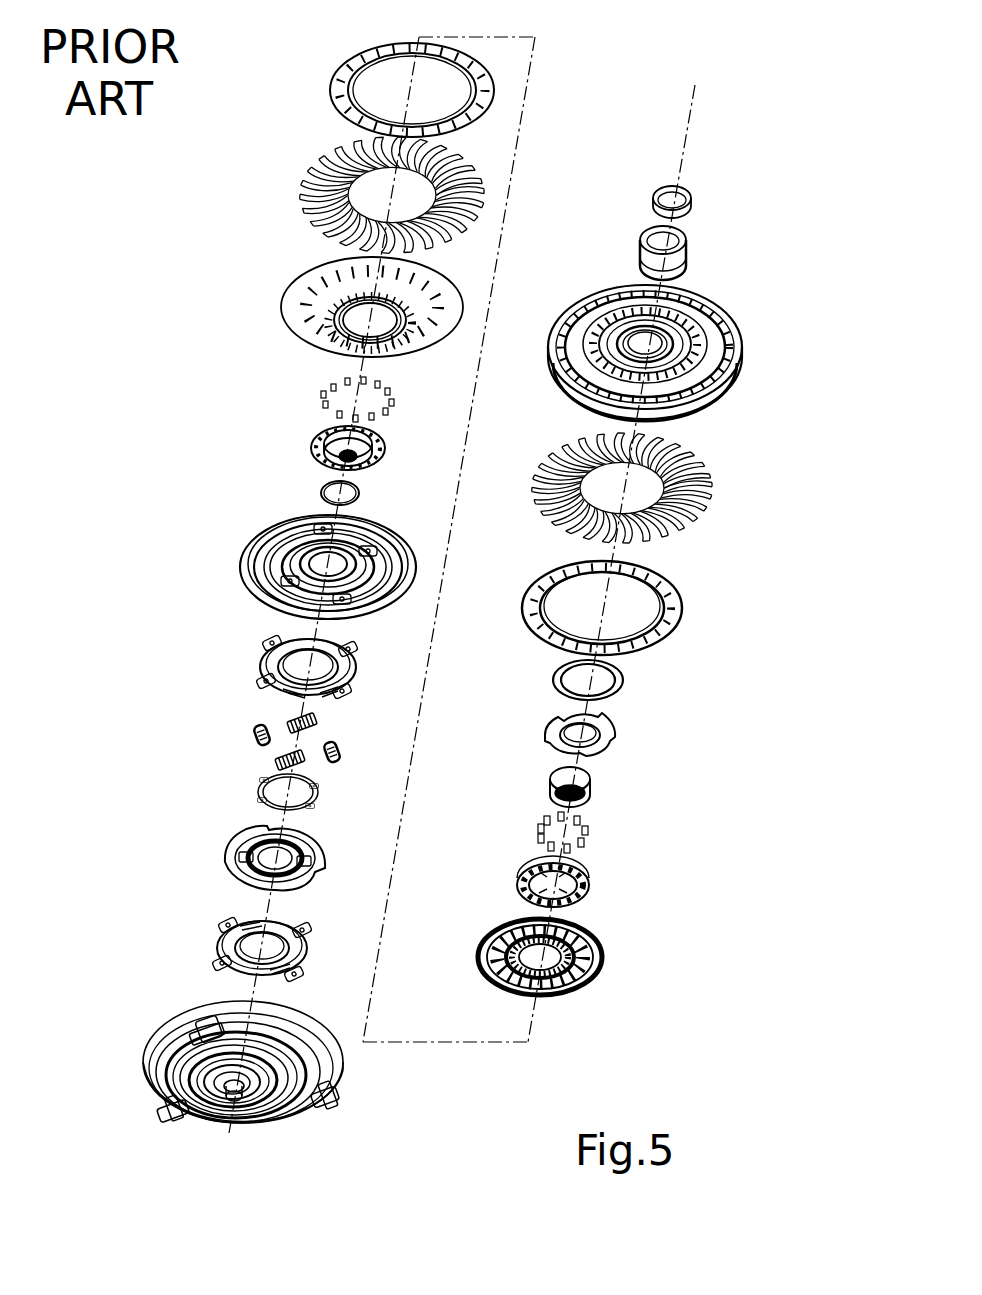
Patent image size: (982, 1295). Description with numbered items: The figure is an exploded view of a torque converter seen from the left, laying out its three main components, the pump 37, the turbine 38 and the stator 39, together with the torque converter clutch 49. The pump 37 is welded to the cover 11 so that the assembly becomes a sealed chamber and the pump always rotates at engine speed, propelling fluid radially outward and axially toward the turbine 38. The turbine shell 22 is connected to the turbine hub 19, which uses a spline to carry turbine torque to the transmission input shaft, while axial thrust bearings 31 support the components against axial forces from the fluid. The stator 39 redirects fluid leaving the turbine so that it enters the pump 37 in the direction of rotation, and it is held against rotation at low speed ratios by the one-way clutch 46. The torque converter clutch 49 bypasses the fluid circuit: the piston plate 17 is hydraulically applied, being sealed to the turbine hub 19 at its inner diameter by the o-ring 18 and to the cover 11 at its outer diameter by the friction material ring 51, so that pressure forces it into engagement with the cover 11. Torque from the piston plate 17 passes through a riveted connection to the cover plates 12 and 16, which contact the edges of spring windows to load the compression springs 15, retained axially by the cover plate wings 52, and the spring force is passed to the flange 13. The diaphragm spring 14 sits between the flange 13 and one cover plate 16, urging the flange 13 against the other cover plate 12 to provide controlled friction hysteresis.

The cover 11 is at (168, 993).
The cover plate 12 is at (203, 915).
The flange 13 is at (217, 832).
The diaphragm spring 14 is at (248, 782).
The springs 15 is at (242, 710).
The cover plate 16 is at (242, 638).
The piston plate 17 is at (235, 515).
The o-ring 18 is at (305, 475).
The turbine hub 19 is at (298, 423).
The turbine shell 22 is at (287, 277).
The axial thrust bearings 31 is at (543, 658).
The pump 37 is at (767, 220).
The turbine 38 is at (224, 448).
The stator 39 is at (668, 740).
The one-way clutch 46 is at (605, 768).
The torque converter clutch 49 is at (197, 458).
The friction material ring 51 is at (287, 567).
The cover plate wings 52 is at (219, 927).